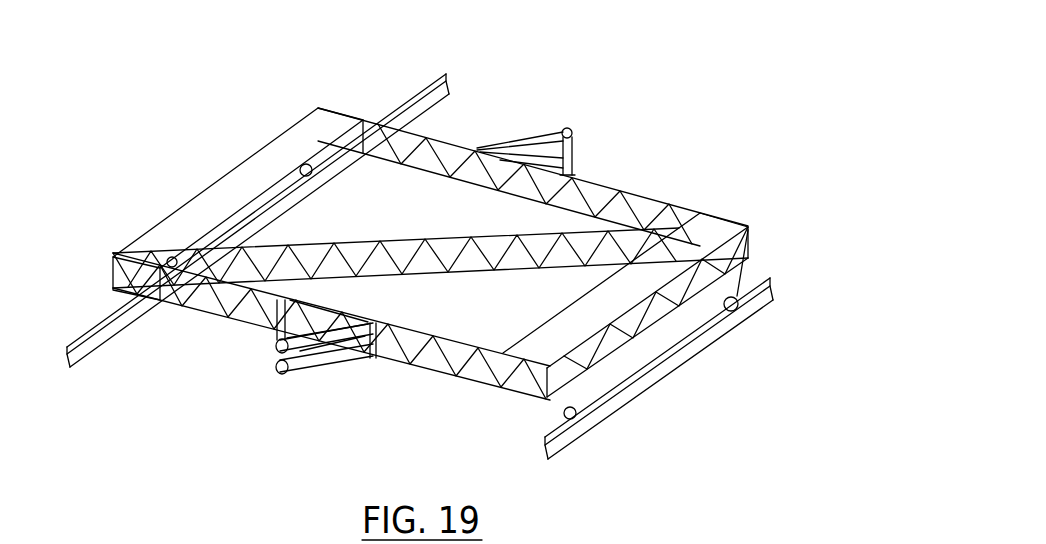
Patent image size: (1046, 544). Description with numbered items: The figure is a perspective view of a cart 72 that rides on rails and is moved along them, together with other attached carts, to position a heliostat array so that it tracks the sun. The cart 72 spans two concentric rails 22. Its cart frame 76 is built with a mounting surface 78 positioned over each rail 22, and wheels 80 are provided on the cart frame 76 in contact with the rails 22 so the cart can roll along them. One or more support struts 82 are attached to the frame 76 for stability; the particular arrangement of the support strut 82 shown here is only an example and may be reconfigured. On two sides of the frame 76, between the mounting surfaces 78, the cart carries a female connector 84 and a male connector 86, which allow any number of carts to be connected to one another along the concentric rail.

The concentric rail 22 is at (400, 100).
The cart 72 is at (718, 132).
The cart frame 76 is at (643, 193).
The mounting surface 78 is at (230, 192).
The wheel 80 is at (312, 174).
The support strut 82 is at (517, 268).
The female connector 84 is at (307, 367).
The male connector 86 is at (577, 155).